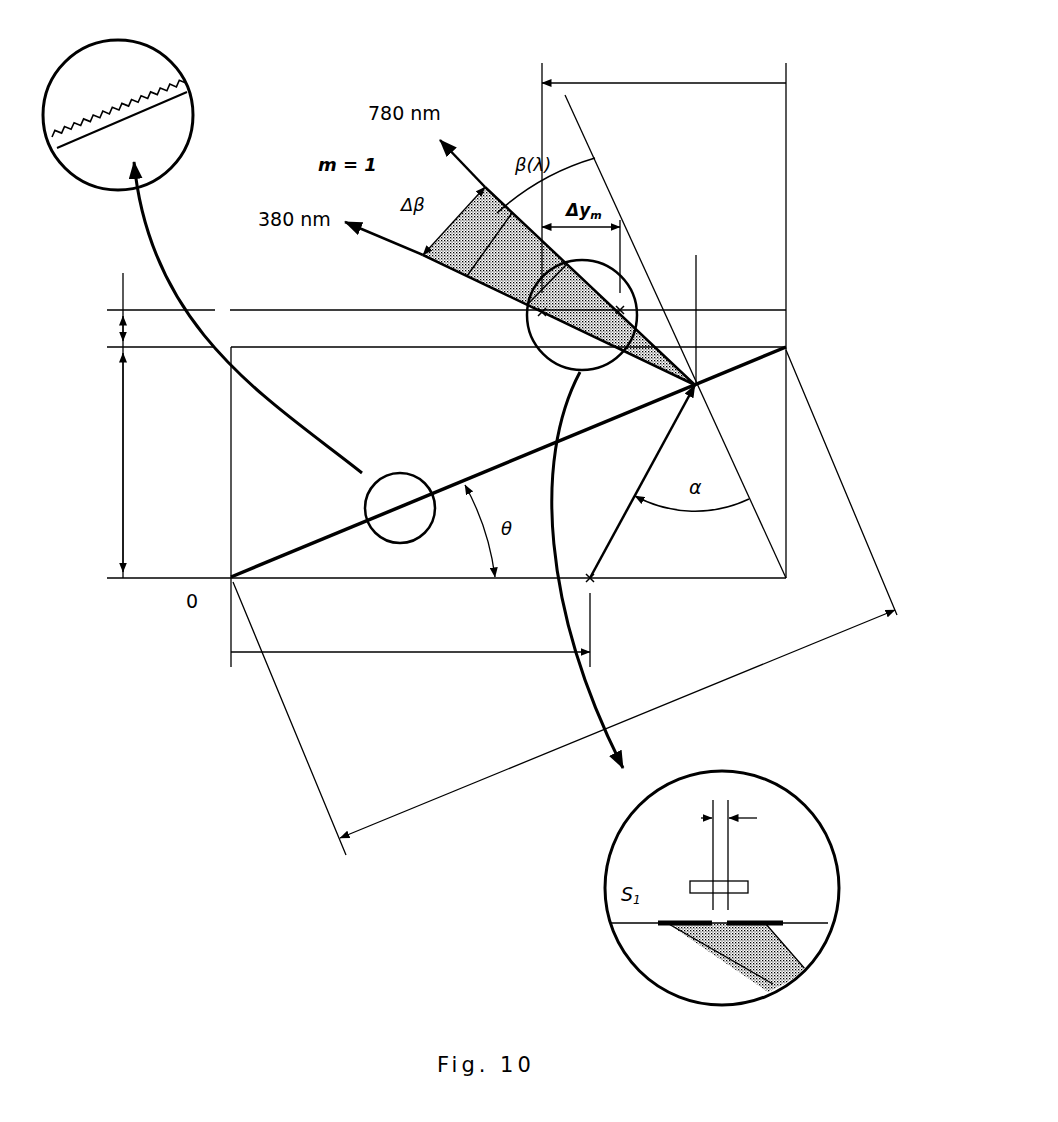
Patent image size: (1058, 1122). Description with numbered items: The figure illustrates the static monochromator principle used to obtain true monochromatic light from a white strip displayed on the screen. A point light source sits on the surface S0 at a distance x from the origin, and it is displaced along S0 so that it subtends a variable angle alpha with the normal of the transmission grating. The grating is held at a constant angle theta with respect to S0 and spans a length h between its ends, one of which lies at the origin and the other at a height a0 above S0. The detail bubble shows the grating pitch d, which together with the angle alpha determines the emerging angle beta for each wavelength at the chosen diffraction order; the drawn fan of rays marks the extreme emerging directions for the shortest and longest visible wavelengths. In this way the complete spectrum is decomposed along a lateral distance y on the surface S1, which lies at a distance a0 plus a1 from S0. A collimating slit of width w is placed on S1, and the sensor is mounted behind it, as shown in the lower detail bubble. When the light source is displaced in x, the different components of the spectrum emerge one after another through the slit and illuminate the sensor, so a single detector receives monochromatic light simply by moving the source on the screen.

The transmission grating is at (508, 462).
The grating pitch d is at (79, 85).
The element sensor is at (765, 876).
The collimating slit is at (789, 933).
The surface S1 is at (446, 296).
The surface S0 is at (446, 563).
The distance a1 is at (109, 310).
The distance a0 is at (109, 462).
The distance x is at (410, 622).
The distance y is at (664, 68).
The grating length h is at (565, 602).